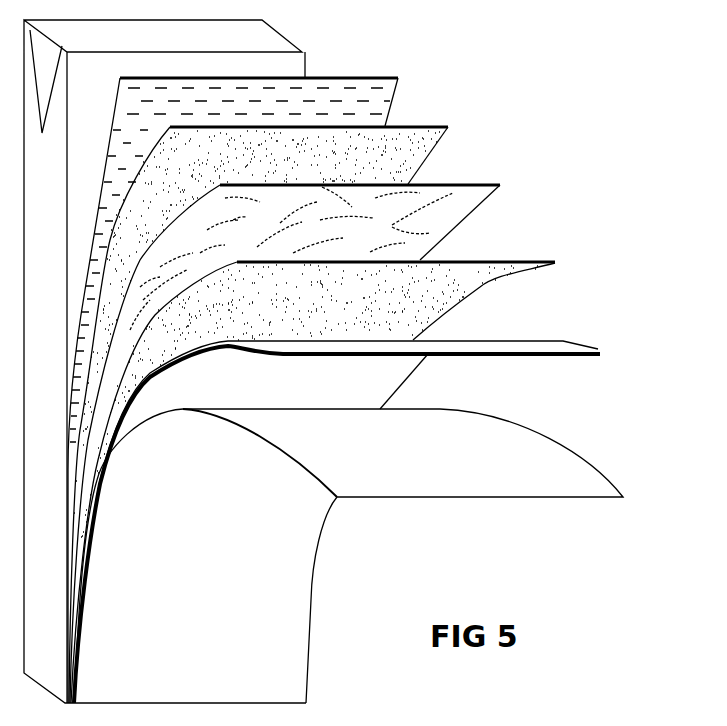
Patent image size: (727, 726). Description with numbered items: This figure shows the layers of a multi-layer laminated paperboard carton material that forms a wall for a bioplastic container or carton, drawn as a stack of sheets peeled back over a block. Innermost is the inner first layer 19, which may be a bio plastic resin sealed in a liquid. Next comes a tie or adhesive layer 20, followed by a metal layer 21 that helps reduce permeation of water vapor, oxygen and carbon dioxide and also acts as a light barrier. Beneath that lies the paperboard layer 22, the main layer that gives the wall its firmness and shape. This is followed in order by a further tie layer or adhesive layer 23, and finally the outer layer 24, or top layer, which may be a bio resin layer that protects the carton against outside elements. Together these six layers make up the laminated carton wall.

The inner first layer 19 is at (398, 79).
The tie or adhesive layer 20 is at (449, 127).
The metal layer 21 is at (500, 186).
The paperboard layer 22 is at (555, 263).
The tie layer or adhesive layer 23 is at (600, 354).
The final outer layer 24 is at (623, 497).